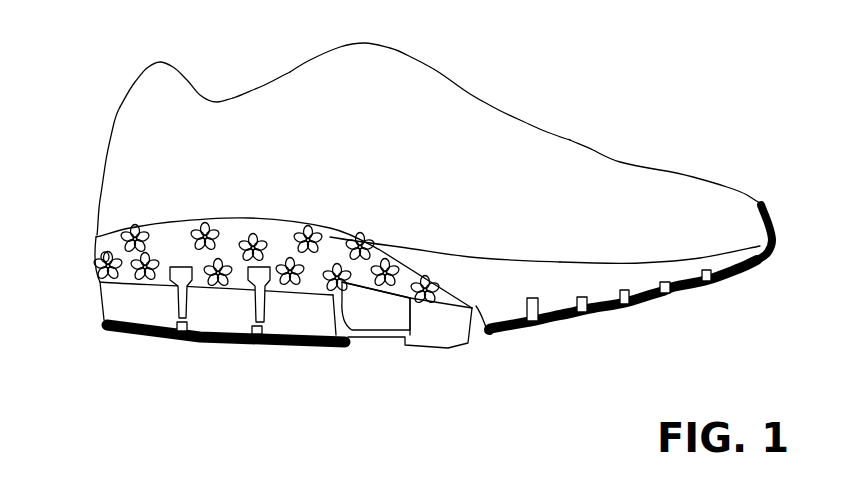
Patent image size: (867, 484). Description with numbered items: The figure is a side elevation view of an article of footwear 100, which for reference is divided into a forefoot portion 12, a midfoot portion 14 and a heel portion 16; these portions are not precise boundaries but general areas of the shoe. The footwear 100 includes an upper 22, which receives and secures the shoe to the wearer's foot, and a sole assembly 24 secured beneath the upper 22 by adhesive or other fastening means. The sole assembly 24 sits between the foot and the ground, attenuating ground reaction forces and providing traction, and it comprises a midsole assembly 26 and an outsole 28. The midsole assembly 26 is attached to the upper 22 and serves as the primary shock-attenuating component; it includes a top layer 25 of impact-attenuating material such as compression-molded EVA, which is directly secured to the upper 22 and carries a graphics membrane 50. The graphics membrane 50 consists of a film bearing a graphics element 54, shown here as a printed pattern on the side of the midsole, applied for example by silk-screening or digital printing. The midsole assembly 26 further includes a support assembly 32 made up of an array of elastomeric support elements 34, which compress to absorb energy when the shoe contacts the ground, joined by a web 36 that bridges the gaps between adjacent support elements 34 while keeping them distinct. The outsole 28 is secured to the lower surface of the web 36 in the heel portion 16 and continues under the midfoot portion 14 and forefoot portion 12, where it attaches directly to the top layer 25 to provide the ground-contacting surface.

The article of footwear 100 is at (660, 108).
The forefoot portion 12 is at (630, 201).
The midfoot portion 14 is at (385, 161).
The heel portion 16 is at (177, 174).
The upper 22 is at (135, 82).
The sole assembly 24 is at (773, 250).
The top layer 25 is at (562, 282).
The midsole assembly 26 is at (110, 262).
The outsole 28 is at (125, 335).
The support assembly 32 is at (345, 312).
The support elements 34 is at (227, 320).
The web 36 is at (247, 327).
The graphics membrane 50 is at (103, 275).
The graphics element 54 is at (110, 242).